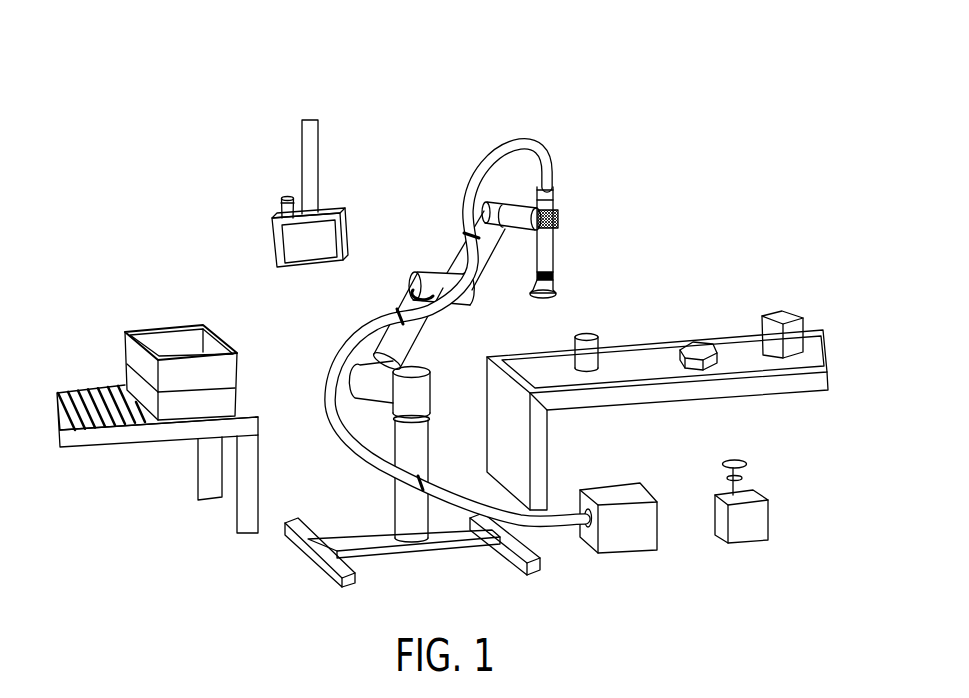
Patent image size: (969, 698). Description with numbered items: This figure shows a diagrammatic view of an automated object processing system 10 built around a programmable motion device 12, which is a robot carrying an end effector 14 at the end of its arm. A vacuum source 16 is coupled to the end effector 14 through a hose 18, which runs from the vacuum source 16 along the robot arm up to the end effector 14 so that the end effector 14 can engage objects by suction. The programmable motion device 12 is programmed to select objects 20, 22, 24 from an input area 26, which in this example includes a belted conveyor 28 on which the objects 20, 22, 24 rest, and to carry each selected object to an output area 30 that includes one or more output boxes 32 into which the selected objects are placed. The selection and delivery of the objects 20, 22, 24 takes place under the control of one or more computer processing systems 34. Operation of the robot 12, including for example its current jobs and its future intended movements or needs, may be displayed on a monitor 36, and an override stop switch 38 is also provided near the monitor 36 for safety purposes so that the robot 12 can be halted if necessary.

The system 10 is at (635, 62).
The programmable motion device 12 is at (427, 273).
The end effector 14 is at (557, 283).
The vacuum source 16 is at (612, 493).
The hose 18 is at (332, 360).
The object 20 is at (587, 335).
The object 22 is at (698, 342).
The object 24 is at (785, 317).
The input area 26 is at (730, 192).
The belted conveyor 28 is at (817, 352).
The output area 30 is at (106, 278).
The output box 32 is at (183, 332).
The computer processing system 34 is at (763, 520).
The monitor 36 is at (340, 215).
The override stop switch 38 is at (290, 197).